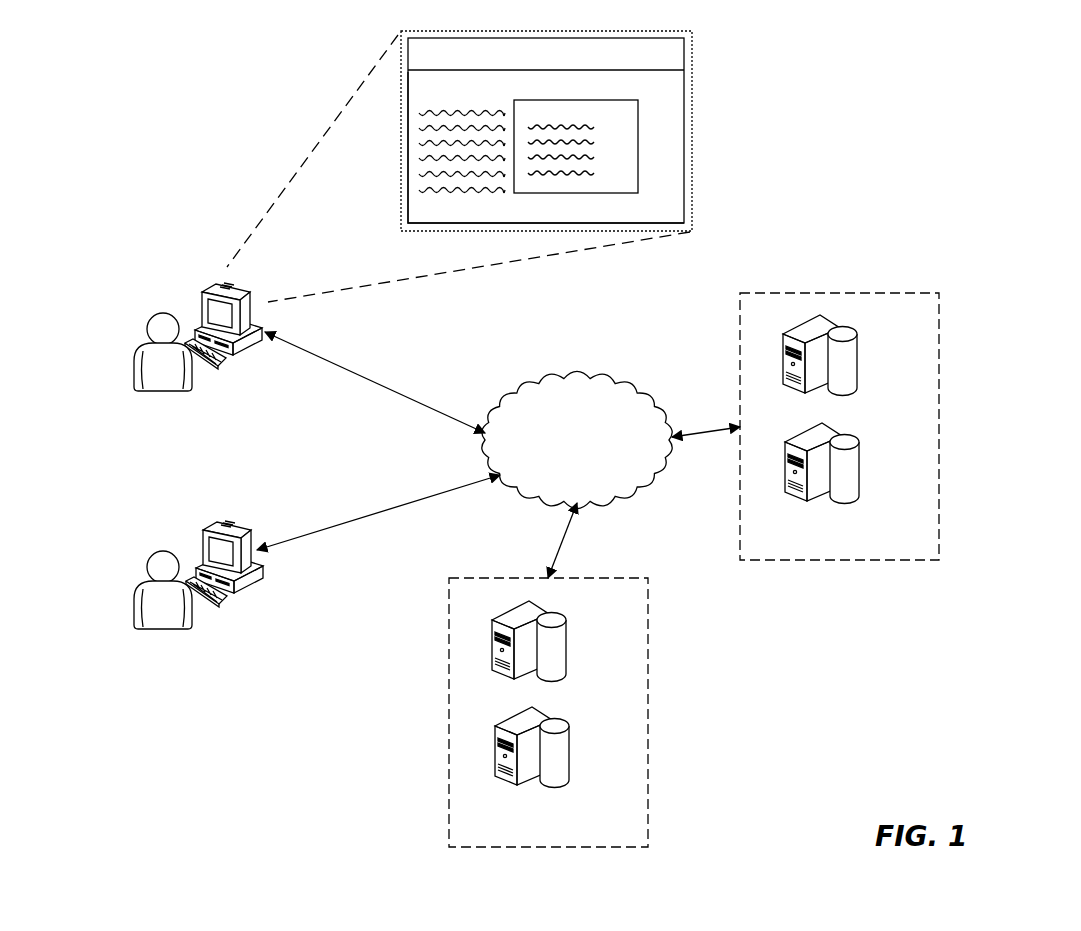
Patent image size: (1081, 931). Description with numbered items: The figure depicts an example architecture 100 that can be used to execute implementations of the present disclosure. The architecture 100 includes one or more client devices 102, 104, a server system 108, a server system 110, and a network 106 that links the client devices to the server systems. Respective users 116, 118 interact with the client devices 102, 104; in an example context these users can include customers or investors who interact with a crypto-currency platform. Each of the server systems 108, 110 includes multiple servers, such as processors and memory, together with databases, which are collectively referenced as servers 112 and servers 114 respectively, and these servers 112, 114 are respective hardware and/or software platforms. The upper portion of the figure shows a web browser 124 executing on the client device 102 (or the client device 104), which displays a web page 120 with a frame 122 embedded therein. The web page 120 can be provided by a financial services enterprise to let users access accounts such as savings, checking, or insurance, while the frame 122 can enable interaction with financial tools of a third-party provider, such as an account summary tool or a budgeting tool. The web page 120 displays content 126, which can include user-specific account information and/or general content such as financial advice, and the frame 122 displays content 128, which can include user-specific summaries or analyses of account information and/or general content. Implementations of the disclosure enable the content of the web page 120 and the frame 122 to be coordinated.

The architecture 100 is at (979, 147).
The client device 102 is at (203, 294).
The client device 104 is at (203, 532).
The network 106 is at (580, 377).
The server system 108 is at (939, 427).
The server system 110 is at (648, 713).
The servers 112 is at (857, 368).
The servers 114 is at (566, 655).
The user 116 is at (160, 392).
The user 118 is at (160, 630).
The web page 120 is at (461, 134).
The frame 122 is at (576, 146).
The web browser 124 is at (692, 115).
The content 126 is at (427, 198).
The content 128 is at (602, 164).